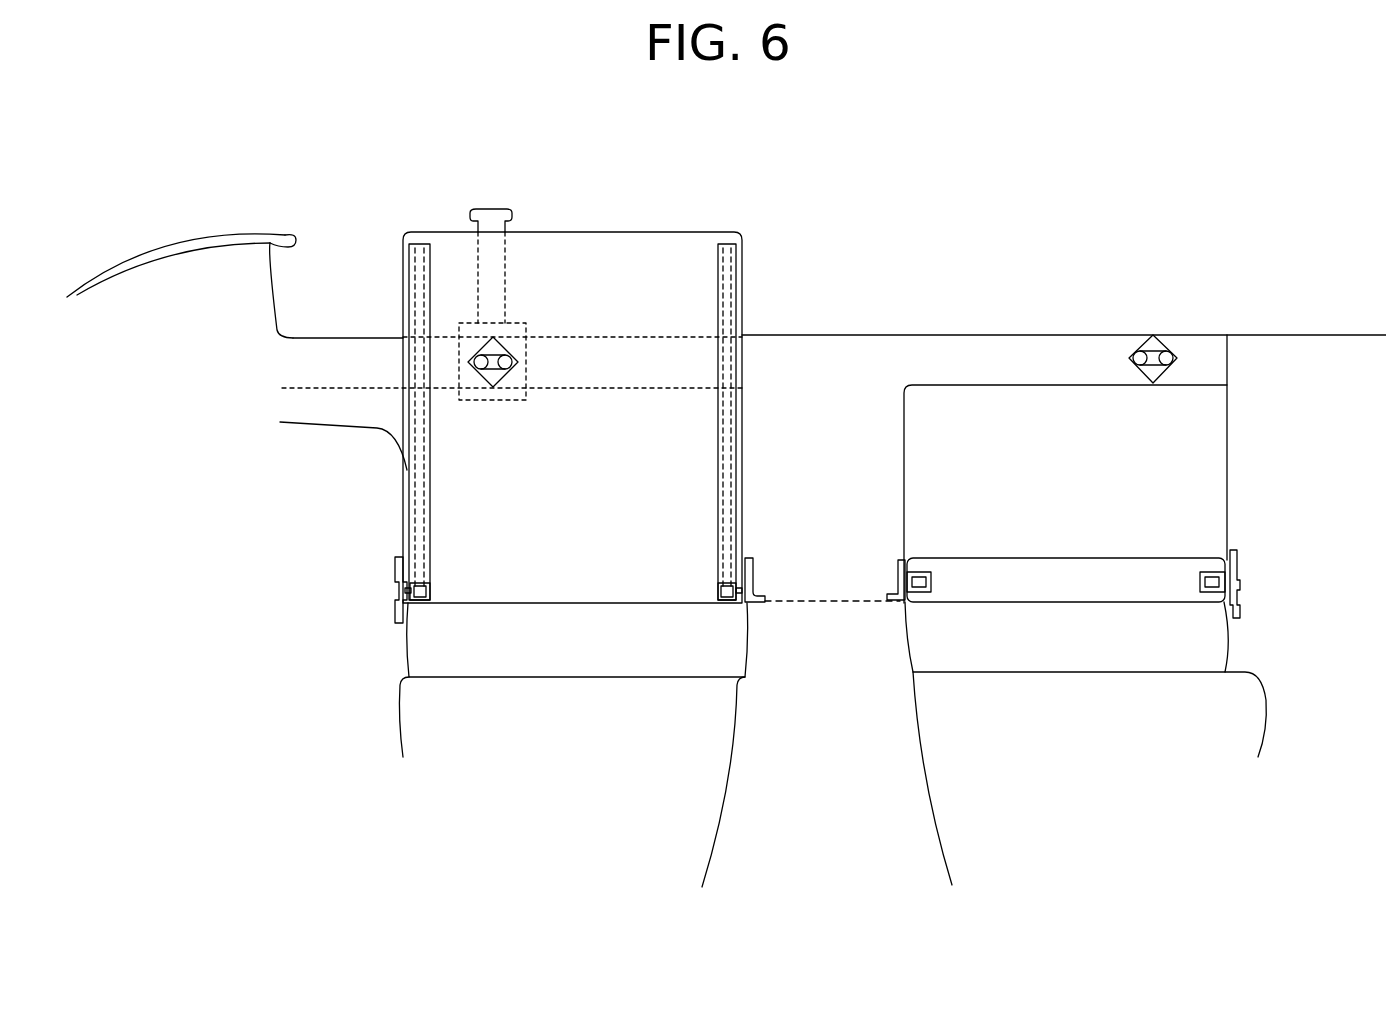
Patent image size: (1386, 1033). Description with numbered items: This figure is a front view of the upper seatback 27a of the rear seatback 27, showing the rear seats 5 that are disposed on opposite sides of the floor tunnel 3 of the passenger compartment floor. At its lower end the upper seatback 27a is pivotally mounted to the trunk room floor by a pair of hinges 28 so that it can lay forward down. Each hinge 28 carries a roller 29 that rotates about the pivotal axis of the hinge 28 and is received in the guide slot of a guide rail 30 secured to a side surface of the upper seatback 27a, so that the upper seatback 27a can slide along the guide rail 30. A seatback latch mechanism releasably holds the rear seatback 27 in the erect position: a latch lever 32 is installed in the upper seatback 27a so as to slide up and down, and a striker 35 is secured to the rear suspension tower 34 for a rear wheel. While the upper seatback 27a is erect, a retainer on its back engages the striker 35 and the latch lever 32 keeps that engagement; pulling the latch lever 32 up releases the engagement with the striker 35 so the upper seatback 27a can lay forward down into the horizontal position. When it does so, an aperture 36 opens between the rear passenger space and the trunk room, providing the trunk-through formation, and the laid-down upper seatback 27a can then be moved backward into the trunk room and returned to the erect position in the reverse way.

The floor tunnel 3 is at (831, 823).
The rear seat 5 is at (388, 752).
The rear seatback 27 is at (417, 648).
The upper seatback 27a is at (672, 242).
The hinge 28 is at (398, 565).
The roller 29 is at (437, 592).
The guide rail 30 is at (415, 282).
The latch lever 32 is at (510, 220).
The rear suspension tower 34 is at (304, 350).
The striker 35 is at (503, 350).
The aperture 36 is at (967, 392).